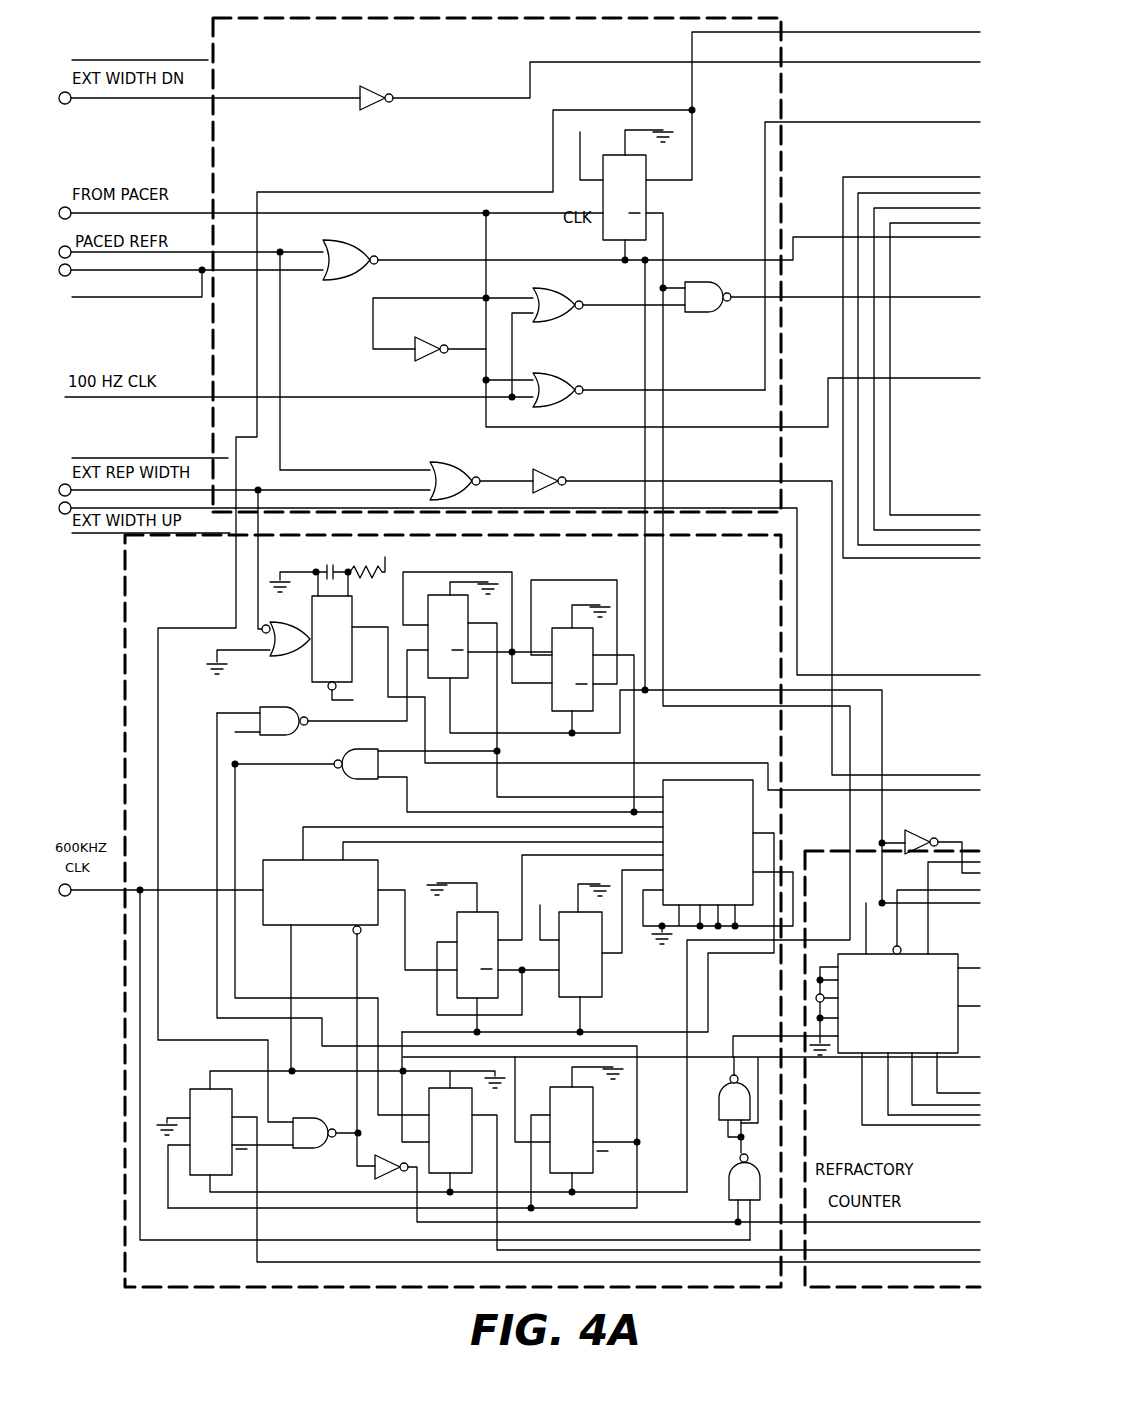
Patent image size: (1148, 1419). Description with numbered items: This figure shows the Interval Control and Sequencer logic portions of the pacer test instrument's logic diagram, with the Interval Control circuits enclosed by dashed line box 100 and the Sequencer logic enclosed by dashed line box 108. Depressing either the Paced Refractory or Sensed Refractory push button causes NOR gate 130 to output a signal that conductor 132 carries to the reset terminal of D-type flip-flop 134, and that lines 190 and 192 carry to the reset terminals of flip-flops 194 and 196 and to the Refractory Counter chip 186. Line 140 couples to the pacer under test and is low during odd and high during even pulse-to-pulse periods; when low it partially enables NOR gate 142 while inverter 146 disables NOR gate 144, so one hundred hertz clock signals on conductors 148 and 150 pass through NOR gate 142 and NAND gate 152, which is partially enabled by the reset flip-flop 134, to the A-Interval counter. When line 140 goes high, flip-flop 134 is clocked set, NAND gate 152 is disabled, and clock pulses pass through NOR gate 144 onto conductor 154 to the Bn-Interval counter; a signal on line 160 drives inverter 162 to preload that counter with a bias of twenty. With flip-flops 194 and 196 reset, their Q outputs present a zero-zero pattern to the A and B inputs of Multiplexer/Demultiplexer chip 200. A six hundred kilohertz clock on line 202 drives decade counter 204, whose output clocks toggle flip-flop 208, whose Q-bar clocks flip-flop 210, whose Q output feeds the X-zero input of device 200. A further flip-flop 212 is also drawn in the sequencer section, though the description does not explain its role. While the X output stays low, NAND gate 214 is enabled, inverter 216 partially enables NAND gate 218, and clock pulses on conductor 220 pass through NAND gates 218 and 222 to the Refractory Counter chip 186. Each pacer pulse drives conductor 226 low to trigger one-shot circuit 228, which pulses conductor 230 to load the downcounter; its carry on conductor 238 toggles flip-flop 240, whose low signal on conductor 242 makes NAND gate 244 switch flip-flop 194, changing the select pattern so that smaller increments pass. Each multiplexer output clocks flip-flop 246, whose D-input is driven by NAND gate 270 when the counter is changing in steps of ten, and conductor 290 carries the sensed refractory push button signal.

The Interval Control dashed line box 100 is at (213, 128).
The Sequencer logic dashed line box 108 is at (125, 732).
The NOR gate 130 is at (338, 244).
The conductor 132 is at (566, 258).
The D-type flip-flop 134 is at (648, 198).
The line 140 is at (233, 210).
The NOR gate 142 is at (570, 316).
The NOR gate 144 is at (570, 382).
The inverter 146 is at (425, 338).
The conductor 148 is at (370, 397).
The conductor 150 is at (514, 350).
The NAND gate 152 is at (706, 312).
The conductor 154 is at (748, 390).
The line 160 is at (238, 100).
The inverter 162 is at (380, 104).
The Refractory Counter chip 186 is at (840, 1055).
The line 190 is at (645, 452).
The line 192 is at (572, 735).
The flip-flop 194 is at (432, 595).
The flip-flop 196 is at (557, 630).
The Multiplexer/Demultiplexer chip 200 is at (703, 782).
The line 202 is at (190, 890).
The decade counter device 204 is at (280, 858).
The toggle flip-flop 208 is at (485, 910).
The flip-flop 210 is at (600, 988).
The D flip-flop 212 is at (200, 1088).
The NAND gate 214 is at (305, 1118).
The inverter 216 is at (370, 1177).
The NAND gate 218 is at (732, 1182).
The conductor 220 is at (288, 1240).
The NAND gate 222 is at (722, 1095).
The conductor 226 is at (400, 488).
The one-shot circuit 228 is at (312, 652).
The conductor 230 is at (547, 763).
The conductor 238 is at (668, 1058).
The toggle flip-flop 240 is at (552, 1096).
The conductor 242 is at (217, 786).
The NAND gate 244 is at (275, 735).
The flip-flop 246 is at (437, 1088).
The NAND gate 270 is at (352, 778).
The conductor 290 is at (197, 303).